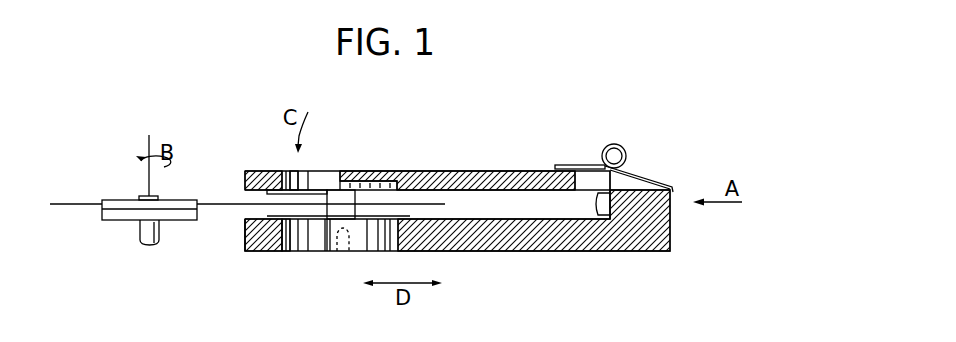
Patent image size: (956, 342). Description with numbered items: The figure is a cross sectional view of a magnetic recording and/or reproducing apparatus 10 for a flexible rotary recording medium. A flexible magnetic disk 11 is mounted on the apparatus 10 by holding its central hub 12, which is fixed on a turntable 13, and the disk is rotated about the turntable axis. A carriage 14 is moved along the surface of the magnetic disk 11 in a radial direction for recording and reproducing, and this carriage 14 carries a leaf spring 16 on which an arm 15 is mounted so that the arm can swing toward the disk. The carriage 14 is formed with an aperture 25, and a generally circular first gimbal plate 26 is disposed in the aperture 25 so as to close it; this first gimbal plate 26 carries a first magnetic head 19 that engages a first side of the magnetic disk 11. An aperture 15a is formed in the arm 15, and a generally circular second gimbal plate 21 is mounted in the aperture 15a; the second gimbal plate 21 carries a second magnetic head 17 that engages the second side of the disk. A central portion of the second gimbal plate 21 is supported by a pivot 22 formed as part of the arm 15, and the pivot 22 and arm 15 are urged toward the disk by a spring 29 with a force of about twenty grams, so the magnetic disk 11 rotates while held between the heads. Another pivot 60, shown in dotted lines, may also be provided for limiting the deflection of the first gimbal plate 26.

The magnetic recording and/or reproducing apparatus 10 is at (492, 333).
The flexible magnetic disk 11 is at (222, 204).
The central hub 12 is at (104, 202).
The turntable 13 is at (108, 222).
The carriage 14 is at (510, 252).
The arm 15 is at (495, 171).
The aperture 15a is at (295, 168).
The leaf spring 16 is at (597, 216).
The second magnetic head 17 is at (368, 172).
The first magnetic head 19 is at (334, 224).
The second gimbal plate 21 is at (310, 172).
The pivot 22 is at (345, 172).
The aperture 25 is at (325, 252).
The first gimbal plate 26 is at (287, 251).
The spring 29 is at (580, 165).
The pivot 60 is at (345, 252).